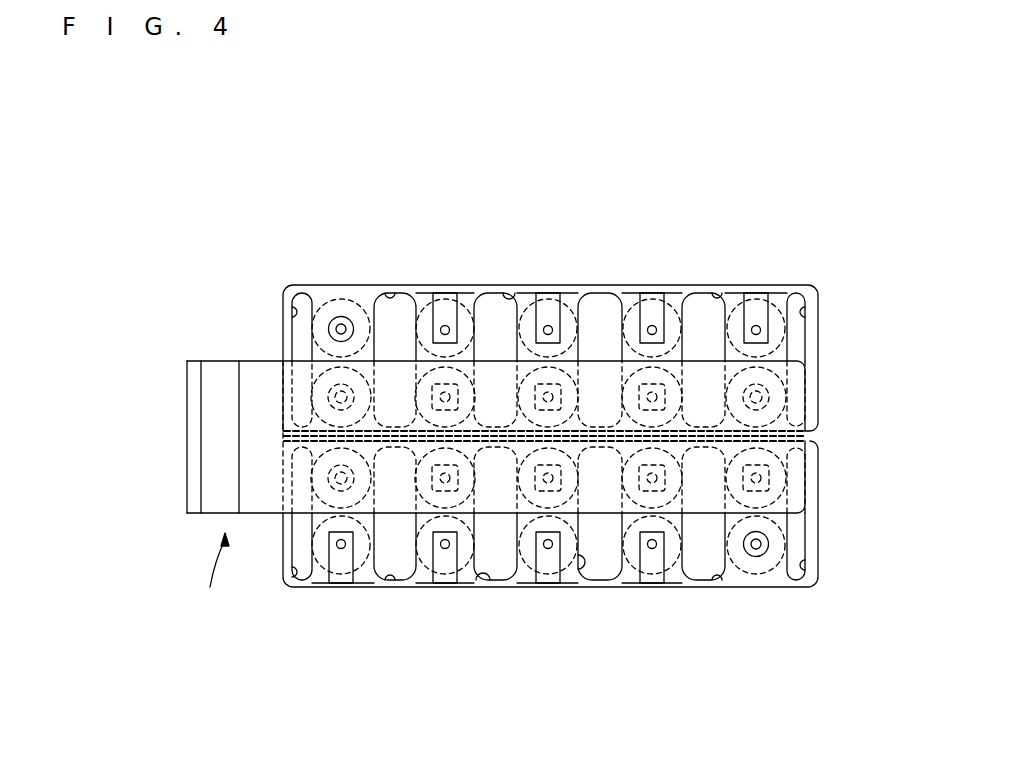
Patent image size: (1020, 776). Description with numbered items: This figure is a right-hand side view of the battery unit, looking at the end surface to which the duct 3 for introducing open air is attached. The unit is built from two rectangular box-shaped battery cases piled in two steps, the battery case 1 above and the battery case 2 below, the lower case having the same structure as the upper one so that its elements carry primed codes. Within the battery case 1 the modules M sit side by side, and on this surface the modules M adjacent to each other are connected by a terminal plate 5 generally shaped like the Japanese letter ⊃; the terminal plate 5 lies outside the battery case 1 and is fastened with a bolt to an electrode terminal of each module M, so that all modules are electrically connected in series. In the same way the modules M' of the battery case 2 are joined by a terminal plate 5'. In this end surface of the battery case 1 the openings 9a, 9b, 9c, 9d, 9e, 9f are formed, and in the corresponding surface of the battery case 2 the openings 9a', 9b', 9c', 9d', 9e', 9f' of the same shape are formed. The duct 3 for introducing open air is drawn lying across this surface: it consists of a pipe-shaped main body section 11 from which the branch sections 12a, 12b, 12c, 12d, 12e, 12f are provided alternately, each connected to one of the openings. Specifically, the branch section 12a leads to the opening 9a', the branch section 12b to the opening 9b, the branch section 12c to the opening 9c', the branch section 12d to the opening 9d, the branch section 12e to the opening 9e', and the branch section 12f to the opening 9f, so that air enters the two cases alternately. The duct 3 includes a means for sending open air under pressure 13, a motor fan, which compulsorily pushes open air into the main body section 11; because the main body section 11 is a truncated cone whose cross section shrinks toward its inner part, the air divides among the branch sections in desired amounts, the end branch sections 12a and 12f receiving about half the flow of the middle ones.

The battery case 1 is at (366, 285).
The battery case 2 is at (783, 588).
The duct for introducing open air 3 is at (215, 577).
The terminal plate 5 is at (548, 324).
The terminal plate 5' is at (548, 552).
The opening 9a is at (274, 327).
The opening 9b is at (391, 268).
The opening 9c is at (525, 265).
The opening 9d is at (600, 480).
The opening 9e is at (731, 264).
The opening 9f is at (834, 315).
The opening 9a' is at (280, 601).
The opening 9b' is at (400, 614).
The opening 9c' is at (472, 614).
The opening 9d' is at (566, 604).
The opening 9e' is at (707, 612).
The opening 9f' is at (837, 548).
The main body section 11 is at (257, 361).
The branch section 12a is at (292, 545).
The branch section 12b is at (421, 292).
The branch section 12c is at (498, 585).
The branch section 12d is at (598, 293).
The branch section 12e is at (686, 583).
The branch section 12f is at (819, 341).
The means for sending open air under pressure 13 is at (208, 513).
The module M is at (548, 331).
The module M' is at (548, 539).